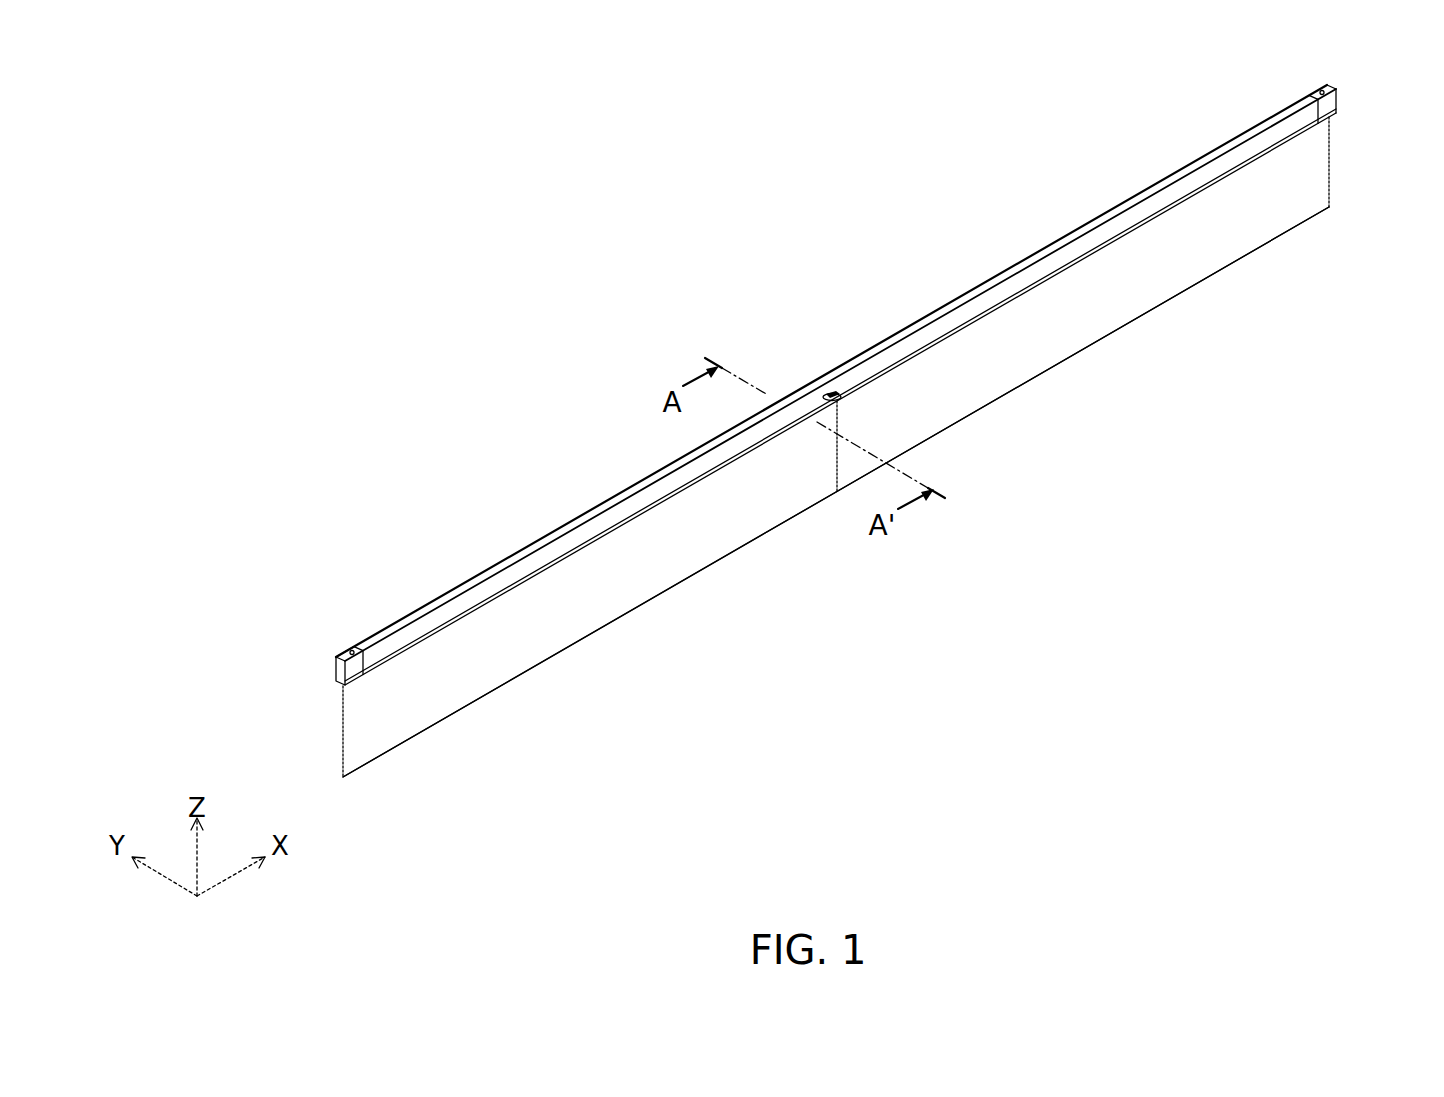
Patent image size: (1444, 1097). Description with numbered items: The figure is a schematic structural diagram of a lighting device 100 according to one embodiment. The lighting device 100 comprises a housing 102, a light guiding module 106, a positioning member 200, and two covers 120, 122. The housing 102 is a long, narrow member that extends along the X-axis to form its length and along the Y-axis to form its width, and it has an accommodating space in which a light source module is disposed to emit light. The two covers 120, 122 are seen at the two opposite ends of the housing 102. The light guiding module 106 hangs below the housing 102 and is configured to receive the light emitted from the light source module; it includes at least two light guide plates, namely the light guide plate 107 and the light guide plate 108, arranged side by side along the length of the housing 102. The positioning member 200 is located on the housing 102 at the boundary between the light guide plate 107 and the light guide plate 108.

The lighting device 100 is at (550, 206).
The housing 102 is at (545, 545).
The light guiding module 106 is at (1025, 585).
The light guide plate 107 is at (596, 598).
The light guide plate 108 is at (1113, 298).
The cover 120 is at (336, 673).
The cover 122 is at (1338, 100).
The positioning member 200 is at (827, 386).